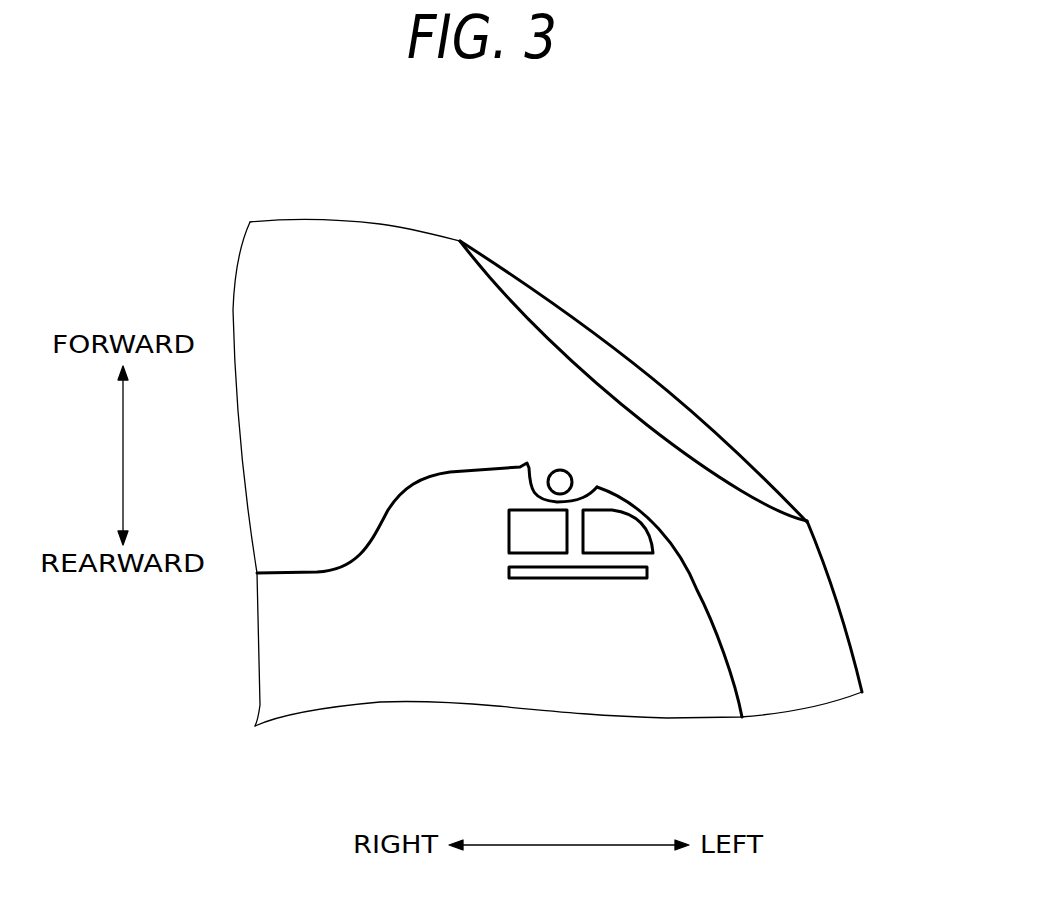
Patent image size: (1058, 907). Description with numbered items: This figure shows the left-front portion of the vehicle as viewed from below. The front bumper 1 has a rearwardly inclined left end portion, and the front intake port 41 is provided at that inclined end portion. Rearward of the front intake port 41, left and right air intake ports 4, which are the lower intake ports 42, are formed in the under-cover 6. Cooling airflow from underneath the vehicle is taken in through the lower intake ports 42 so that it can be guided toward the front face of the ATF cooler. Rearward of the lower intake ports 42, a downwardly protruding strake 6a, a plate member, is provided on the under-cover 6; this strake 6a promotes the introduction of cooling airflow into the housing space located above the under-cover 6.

The front bumper 1 is at (828, 625).
The front intake port 41 is at (645, 391).
The air intake port 4 is at (540, 572).
The lower intake port 42 is at (597, 542).
The under-cover 6 is at (665, 695).
The strake 6a is at (628, 580).